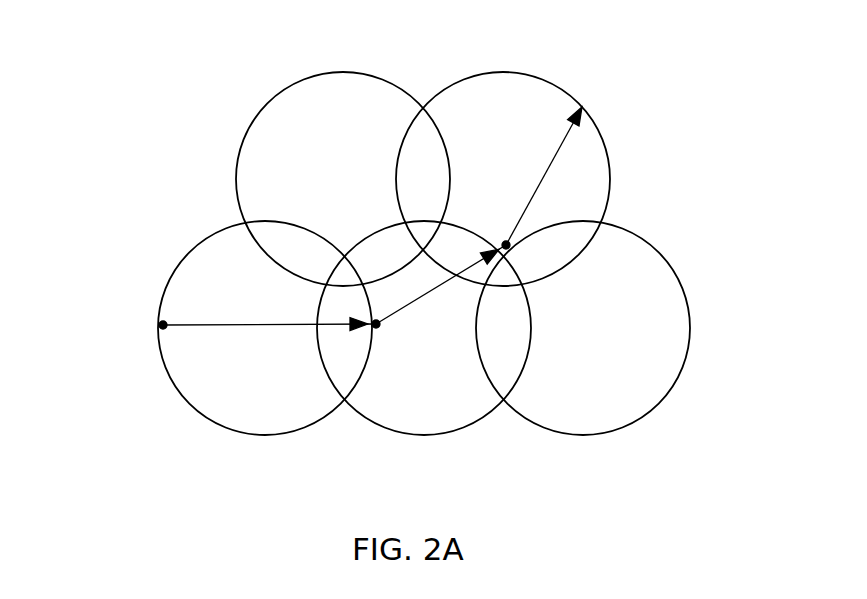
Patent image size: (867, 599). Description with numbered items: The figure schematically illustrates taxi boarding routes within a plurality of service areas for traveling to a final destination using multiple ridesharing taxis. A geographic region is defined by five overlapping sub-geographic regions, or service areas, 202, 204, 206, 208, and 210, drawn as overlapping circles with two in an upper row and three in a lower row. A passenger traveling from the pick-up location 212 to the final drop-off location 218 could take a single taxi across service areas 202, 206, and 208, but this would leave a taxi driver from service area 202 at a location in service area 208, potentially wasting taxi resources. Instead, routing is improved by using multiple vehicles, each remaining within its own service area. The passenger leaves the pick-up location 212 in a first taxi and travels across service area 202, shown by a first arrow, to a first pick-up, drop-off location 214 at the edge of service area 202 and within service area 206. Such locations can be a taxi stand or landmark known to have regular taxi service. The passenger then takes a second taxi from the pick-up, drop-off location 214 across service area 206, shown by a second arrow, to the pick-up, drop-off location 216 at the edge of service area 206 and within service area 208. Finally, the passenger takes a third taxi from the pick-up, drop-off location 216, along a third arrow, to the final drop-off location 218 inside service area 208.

The service area 202 is at (263, 435).
The service area 204 is at (340, 73).
The service area 206 is at (432, 435).
The service area 208 is at (505, 72).
The service area 210 is at (590, 435).
The pick-up location 212 is at (158, 324).
The pick-up, drop-off location 214 is at (380, 328).
The pick-up, drop-off location 216 is at (505, 244).
The final drop-off location 218 is at (583, 107).